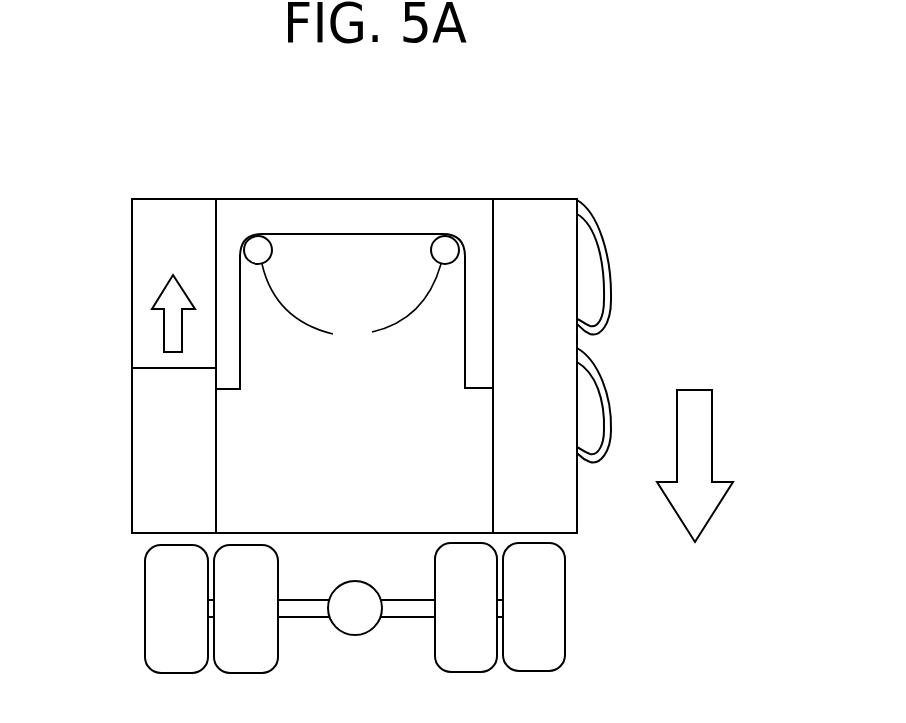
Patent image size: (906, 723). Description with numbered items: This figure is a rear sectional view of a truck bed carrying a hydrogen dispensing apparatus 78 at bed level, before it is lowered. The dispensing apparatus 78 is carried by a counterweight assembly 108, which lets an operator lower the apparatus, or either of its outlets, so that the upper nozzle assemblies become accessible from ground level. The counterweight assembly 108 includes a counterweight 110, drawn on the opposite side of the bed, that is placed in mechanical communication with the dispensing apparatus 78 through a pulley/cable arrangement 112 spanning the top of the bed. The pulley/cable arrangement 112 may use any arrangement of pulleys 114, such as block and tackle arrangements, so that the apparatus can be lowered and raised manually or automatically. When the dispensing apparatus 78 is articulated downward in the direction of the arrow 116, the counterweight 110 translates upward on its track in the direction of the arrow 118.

The counterweight assembly 108 is at (397, 146).
The dispensing apparatus 78 is at (527, 199).
The counterweight 110 is at (132, 437).
The pulley/cable arrangement 112 is at (386, 240).
The pulleys 114 is at (351, 305).
The arrow 116 is at (712, 428).
The arrow 118 is at (162, 292).